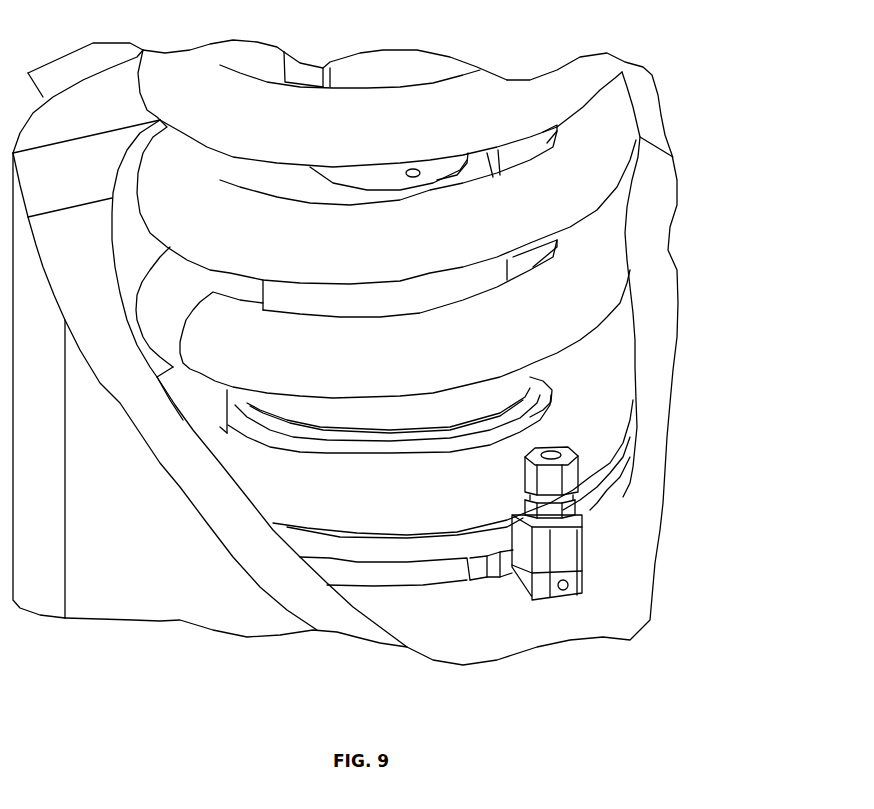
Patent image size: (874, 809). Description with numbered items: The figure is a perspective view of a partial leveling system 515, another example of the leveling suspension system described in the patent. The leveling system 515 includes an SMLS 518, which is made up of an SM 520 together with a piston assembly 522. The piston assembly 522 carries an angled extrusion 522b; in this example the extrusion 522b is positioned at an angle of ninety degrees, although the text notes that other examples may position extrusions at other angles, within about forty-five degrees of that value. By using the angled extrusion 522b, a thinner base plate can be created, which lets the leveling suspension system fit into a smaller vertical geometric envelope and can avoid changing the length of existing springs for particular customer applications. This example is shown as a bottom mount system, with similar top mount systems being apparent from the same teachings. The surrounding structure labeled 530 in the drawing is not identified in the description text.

The leveling system 515 is at (768, 142).
The SMLS 518 is at (450, 230).
The SM 520 is at (323, 332).
The piston assembly 522 is at (453, 551).
The angled extrusion 522b is at (617, 563).
The housing 530 is at (385, 354).